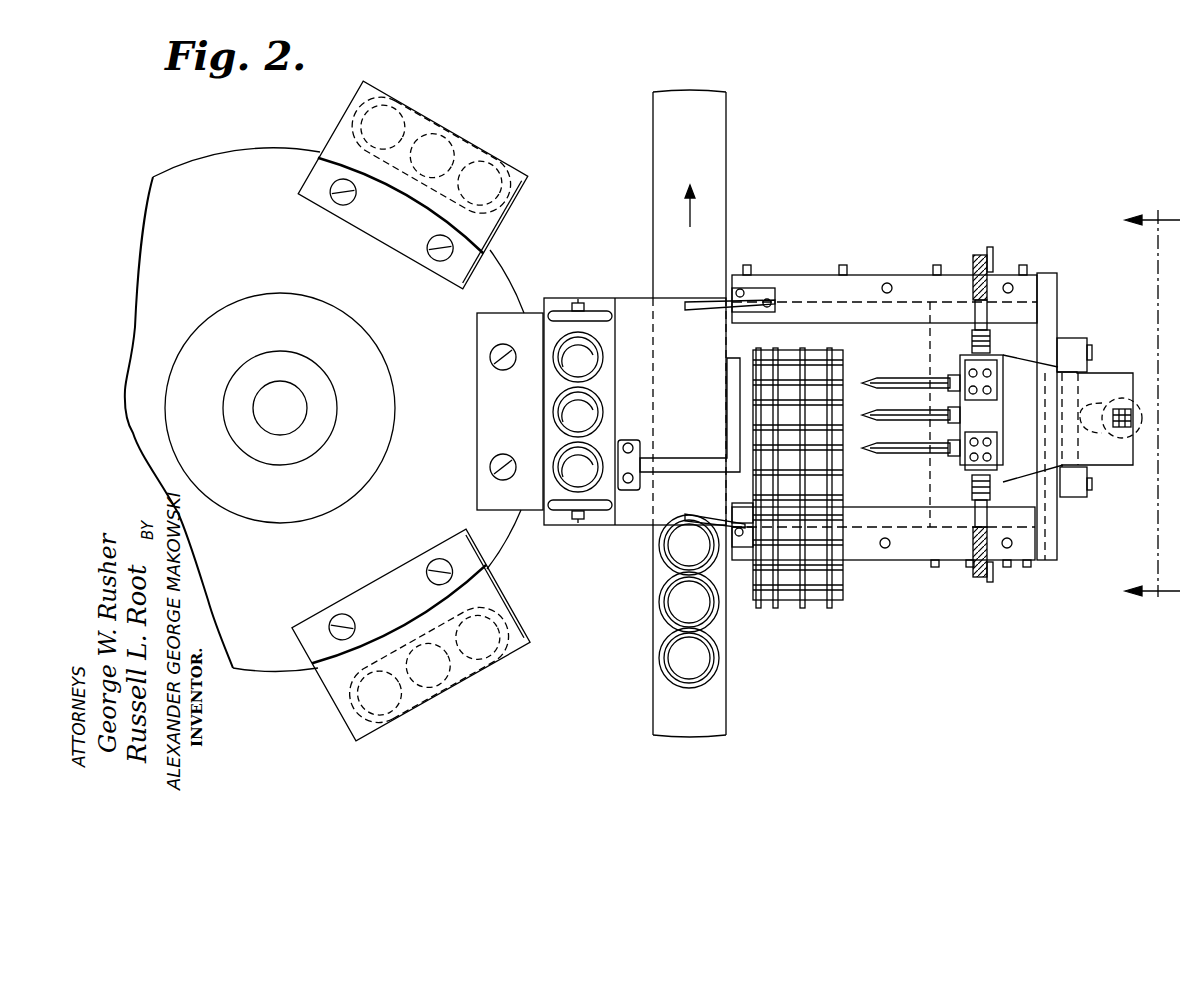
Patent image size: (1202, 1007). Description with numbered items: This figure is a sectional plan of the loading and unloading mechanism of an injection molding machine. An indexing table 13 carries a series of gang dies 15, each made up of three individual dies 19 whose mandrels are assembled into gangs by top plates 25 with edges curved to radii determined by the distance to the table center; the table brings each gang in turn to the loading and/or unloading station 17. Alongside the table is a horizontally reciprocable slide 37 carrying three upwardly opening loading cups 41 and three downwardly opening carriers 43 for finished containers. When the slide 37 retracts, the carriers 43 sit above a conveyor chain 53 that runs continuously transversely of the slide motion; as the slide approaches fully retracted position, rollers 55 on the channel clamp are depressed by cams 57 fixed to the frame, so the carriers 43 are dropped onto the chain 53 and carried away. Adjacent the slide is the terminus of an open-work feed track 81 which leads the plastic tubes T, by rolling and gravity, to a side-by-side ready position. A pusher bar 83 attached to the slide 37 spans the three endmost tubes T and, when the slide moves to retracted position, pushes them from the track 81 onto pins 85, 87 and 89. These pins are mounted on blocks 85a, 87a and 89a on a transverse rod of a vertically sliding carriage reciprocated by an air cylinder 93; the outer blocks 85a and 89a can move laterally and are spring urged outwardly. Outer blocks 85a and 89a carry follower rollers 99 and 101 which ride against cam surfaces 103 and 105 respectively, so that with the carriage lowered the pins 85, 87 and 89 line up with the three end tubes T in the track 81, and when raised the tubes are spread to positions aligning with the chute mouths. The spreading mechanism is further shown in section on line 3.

The indexing table 13 is at (191, 180).
The gang dies 15 is at (517, 206).
The loading and/or unloading station 17 is at (528, 513).
The individual dies 19 is at (473, 160).
The top plates 25 is at (340, 143).
The slide 37 is at (642, 508).
The loading cups 41 is at (560, 365).
The carriers 43 is at (670, 645).
The conveyor chain 53 is at (722, 198).
The rollers 55 is at (578, 303).
The cams 57 is at (707, 307).
The feed track 81 is at (840, 600).
The pusher bar 83 is at (753, 400).
The pin 85 is at (900, 451).
The block 85a is at (966, 463).
The pin 87 is at (913, 418).
The block 87a is at (992, 413).
The pin 89 is at (903, 381).
The block 89a is at (968, 372).
The air cylinder 93 is at (1128, 400).
The follower roller 99 is at (986, 488).
The follower roller 101 is at (990, 344).
The cam surface 103 is at (980, 538).
The cam surface 105 is at (980, 300).
The tube T is at (590, 400).
The section line 3- 3 is at (1162, 407).